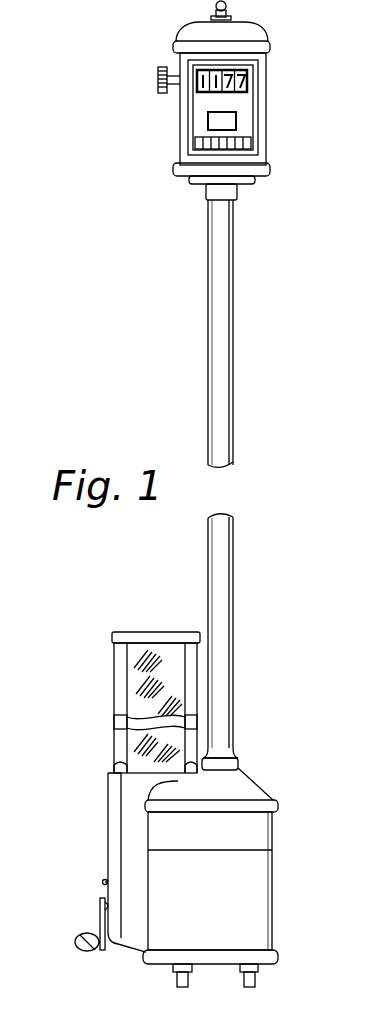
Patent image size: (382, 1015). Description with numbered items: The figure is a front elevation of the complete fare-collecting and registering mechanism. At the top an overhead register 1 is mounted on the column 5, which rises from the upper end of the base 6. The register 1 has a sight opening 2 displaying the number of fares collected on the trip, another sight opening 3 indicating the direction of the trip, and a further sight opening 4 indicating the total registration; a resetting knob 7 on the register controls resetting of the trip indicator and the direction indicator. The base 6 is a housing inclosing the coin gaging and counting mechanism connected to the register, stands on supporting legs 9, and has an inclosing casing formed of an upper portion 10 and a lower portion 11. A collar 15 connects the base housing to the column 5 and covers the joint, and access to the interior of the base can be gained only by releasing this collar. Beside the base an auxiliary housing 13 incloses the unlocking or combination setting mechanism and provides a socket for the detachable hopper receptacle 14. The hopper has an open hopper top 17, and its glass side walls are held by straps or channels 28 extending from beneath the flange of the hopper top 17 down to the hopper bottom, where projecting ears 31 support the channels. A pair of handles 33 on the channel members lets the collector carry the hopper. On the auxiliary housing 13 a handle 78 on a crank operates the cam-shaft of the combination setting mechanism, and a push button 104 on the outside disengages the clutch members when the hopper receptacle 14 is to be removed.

The overhead register 1 is at (273, 84).
The sight opening 2 is at (250, 73).
The sight opening 3 is at (237, 120).
The sight opening 4 is at (250, 140).
The column 5 is at (223, 308).
The base 6 is at (255, 835).
The resetting knob 7 is at (160, 92).
The supporting legs 9 is at (245, 978).
The upper portion 10 is at (245, 790).
The lower portion 11 is at (253, 912).
The auxiliary housing 13 is at (133, 820).
The hopper receptacle 14 is at (120, 687).
The collar 15 is at (236, 763).
The hopper top 17 is at (145, 636).
The channels 28 is at (120, 663).
The projecting ears 31 is at (112, 765).
The handles 33 is at (150, 723).
The handle 78 is at (82, 938).
The push button 104 is at (100, 882).